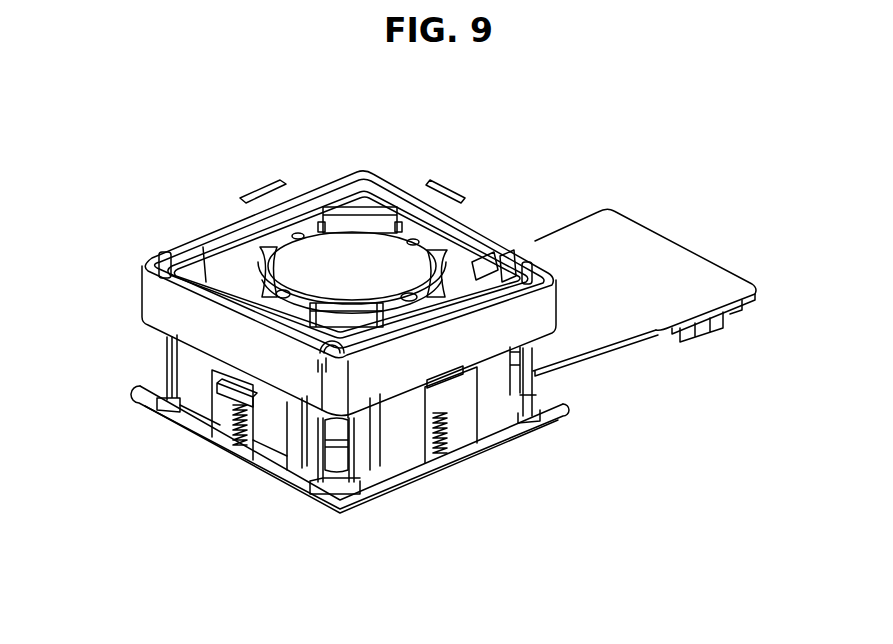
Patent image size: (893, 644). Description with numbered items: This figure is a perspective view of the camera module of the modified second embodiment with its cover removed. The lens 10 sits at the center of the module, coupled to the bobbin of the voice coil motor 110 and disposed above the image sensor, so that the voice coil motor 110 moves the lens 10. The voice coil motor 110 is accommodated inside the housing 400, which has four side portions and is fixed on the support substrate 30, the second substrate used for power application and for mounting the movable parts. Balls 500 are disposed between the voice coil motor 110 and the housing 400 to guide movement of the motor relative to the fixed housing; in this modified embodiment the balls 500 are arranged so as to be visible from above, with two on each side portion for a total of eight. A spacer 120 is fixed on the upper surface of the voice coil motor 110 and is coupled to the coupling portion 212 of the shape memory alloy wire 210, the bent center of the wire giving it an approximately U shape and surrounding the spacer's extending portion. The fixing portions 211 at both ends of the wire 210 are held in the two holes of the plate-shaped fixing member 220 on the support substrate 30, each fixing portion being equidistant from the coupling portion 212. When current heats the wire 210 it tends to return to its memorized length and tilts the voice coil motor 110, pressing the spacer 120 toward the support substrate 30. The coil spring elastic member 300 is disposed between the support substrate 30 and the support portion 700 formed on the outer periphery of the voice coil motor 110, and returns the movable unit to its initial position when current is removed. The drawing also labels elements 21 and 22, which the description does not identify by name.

The lens 10 is at (347, 252).
The ball 500 is at (203, 287).
The voice coil motor 110 is at (480, 270).
The spacer 120 is at (507, 268).
The housing 400 is at (190, 322).
The circuit board 21 is at (578, 342).
The connector 22 is at (706, 328).
The wire 210 is at (308, 459).
The support substrate 30 is at (380, 493).
The fixing portion 211 is at (353, 495).
The coupling portion 212 is at (317, 363).
The elastic member 300 is at (446, 450).
The support portion 700 is at (450, 393).
The fixing member 220 is at (547, 413).